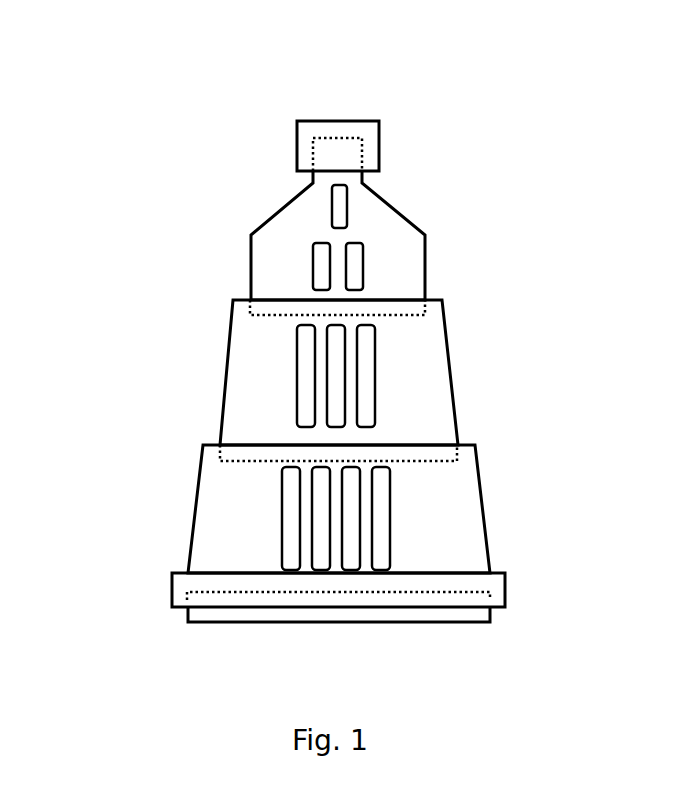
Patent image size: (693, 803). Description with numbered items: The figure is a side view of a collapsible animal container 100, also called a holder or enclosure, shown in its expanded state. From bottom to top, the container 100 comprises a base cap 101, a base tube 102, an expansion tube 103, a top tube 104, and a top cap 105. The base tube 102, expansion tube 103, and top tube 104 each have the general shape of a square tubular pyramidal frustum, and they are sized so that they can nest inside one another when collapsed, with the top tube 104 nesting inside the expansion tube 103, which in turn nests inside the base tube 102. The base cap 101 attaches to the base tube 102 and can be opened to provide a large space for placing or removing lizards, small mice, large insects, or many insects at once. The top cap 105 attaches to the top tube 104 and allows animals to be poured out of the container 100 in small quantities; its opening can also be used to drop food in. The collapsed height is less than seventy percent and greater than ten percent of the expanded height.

The collapsible animal container 100 is at (62, 73).
The base cap 101 is at (490, 615).
The base tube 102 is at (485, 518).
The expansion tube 103 is at (455, 398).
The top tube 104 is at (427, 248).
The top cap 105 is at (380, 152).